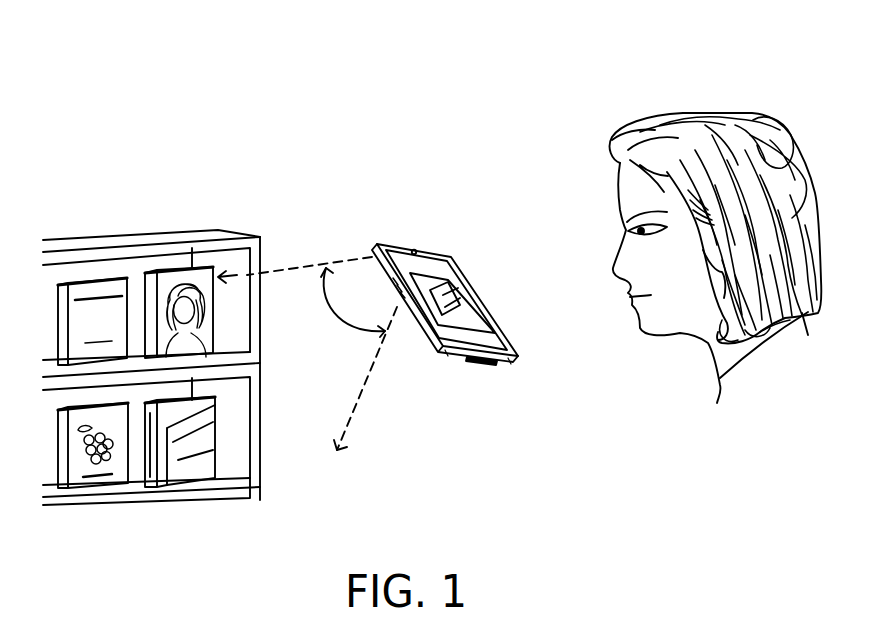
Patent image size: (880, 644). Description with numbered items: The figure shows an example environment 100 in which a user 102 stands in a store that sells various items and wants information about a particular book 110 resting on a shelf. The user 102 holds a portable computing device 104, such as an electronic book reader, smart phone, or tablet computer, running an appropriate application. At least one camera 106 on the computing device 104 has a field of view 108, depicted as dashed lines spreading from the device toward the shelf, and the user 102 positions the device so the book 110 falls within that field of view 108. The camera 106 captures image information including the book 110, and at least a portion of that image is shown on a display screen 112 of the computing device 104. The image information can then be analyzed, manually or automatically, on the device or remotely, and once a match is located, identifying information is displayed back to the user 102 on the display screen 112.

The environment 100 is at (111, 92).
The user 102 is at (572, 167).
The computing device 104 is at (450, 360).
The camera 106 is at (414, 250).
The field of view 108 is at (307, 353).
The book 110 is at (197, 480).
The display screen 112 is at (468, 298).